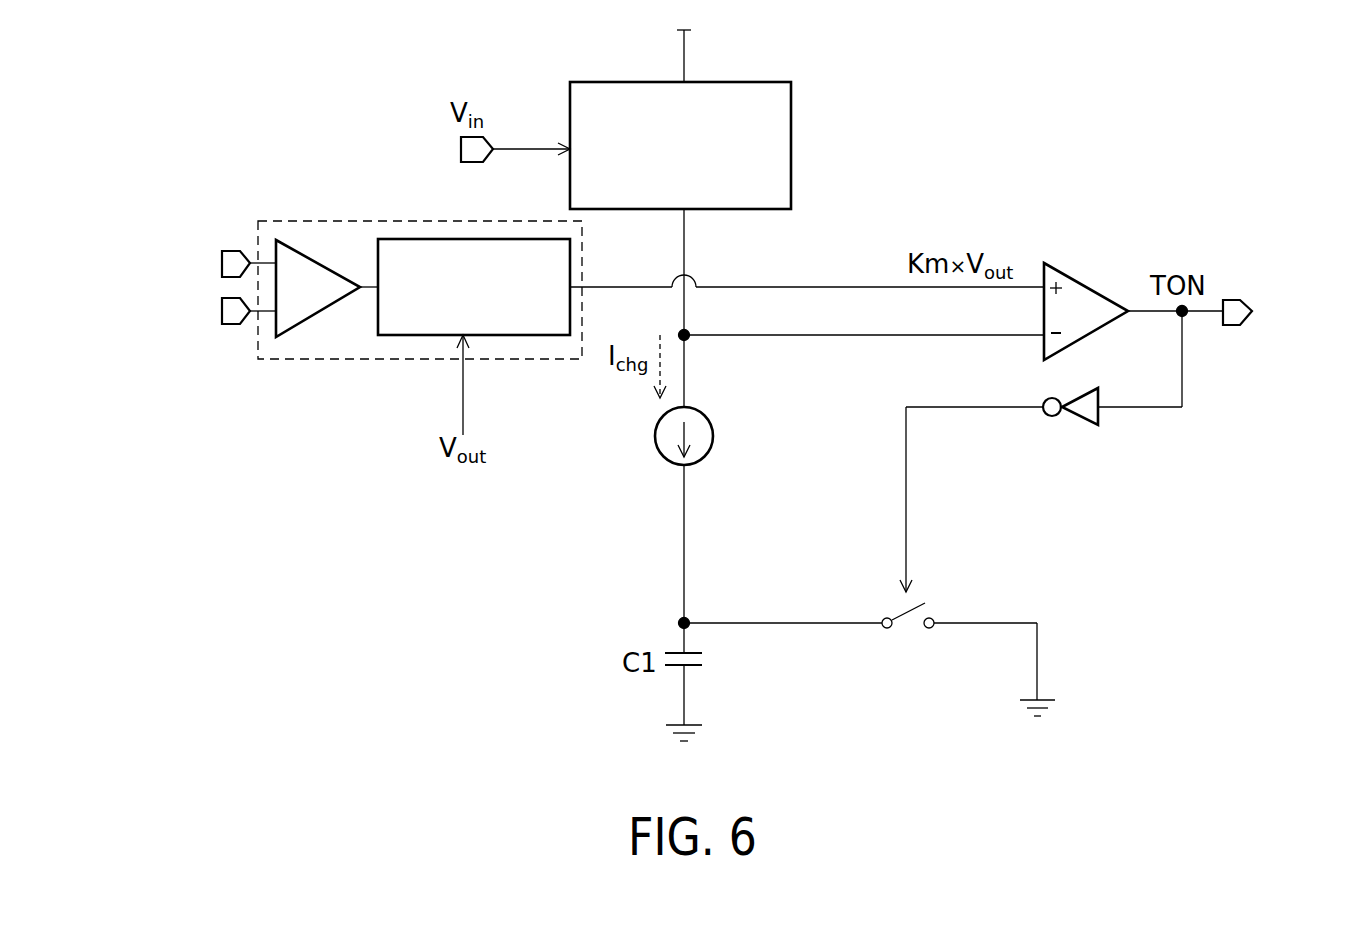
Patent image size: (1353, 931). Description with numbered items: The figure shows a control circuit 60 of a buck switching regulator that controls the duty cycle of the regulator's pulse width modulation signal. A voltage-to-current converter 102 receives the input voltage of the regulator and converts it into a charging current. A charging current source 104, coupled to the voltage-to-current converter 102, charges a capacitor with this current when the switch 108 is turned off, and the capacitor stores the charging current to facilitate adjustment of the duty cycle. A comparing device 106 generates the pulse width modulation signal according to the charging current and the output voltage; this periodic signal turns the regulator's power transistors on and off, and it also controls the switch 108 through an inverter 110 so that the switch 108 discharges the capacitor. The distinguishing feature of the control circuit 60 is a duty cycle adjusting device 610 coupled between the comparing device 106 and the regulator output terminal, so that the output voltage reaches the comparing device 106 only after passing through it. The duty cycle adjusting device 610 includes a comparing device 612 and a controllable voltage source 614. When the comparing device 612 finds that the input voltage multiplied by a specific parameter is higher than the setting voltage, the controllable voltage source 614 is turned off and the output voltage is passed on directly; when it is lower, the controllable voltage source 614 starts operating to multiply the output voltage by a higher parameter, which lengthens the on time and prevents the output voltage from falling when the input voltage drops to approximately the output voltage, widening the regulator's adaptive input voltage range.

The control circuit 60 is at (1227, 138).
The voltage-to-current converter 102 is at (762, 82).
The charging current source 104 is at (715, 435).
The comparing device 106 is at (1083, 273).
The switch 108 is at (907, 630).
The inverter 110 is at (1083, 427).
The duty cycle adjusting device 610 is at (352, 311).
The comparing device 612 is at (316, 258).
The controllable voltage source 614 is at (530, 336).